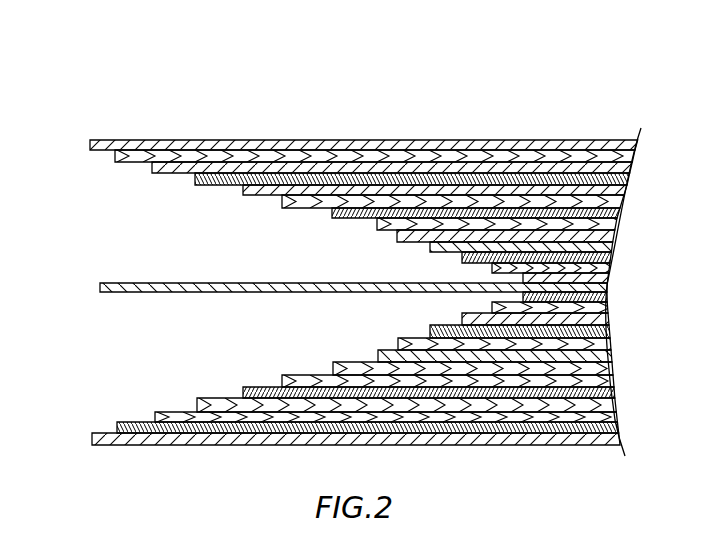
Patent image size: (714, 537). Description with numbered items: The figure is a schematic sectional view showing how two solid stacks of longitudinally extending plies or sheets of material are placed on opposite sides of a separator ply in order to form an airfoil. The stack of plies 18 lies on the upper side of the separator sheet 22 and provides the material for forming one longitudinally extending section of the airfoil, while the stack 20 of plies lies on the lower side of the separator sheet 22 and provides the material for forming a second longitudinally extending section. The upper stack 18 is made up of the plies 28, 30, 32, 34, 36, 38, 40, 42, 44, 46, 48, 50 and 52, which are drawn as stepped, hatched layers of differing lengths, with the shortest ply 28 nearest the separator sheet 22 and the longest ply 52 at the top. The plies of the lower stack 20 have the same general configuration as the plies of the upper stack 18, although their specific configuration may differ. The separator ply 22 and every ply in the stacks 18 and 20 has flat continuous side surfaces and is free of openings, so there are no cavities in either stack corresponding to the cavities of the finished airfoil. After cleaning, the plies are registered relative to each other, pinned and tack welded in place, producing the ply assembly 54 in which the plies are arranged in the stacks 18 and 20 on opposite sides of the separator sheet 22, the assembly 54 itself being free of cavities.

The stack of plies 18 is at (359, 172).
The stack of plies 20 is at (506, 452).
The separator ply 22 is at (102, 274).
The ply 28 is at (612, 279).
The ply 30 is at (612, 267).
The ply 32 is at (610, 257).
The ply 34 is at (612, 247).
The ply 36 is at (612, 238).
The ply 38 is at (391, 231).
The ply 40 is at (353, 220).
The ply 42 is at (296, 209).
The ply 44 is at (248, 197).
The ply 46 is at (197, 188).
The ply 48 is at (152, 168).
The ply 50 is at (115, 157).
The ply 52 is at (90, 146).
The ply assembly 54 is at (315, 395).